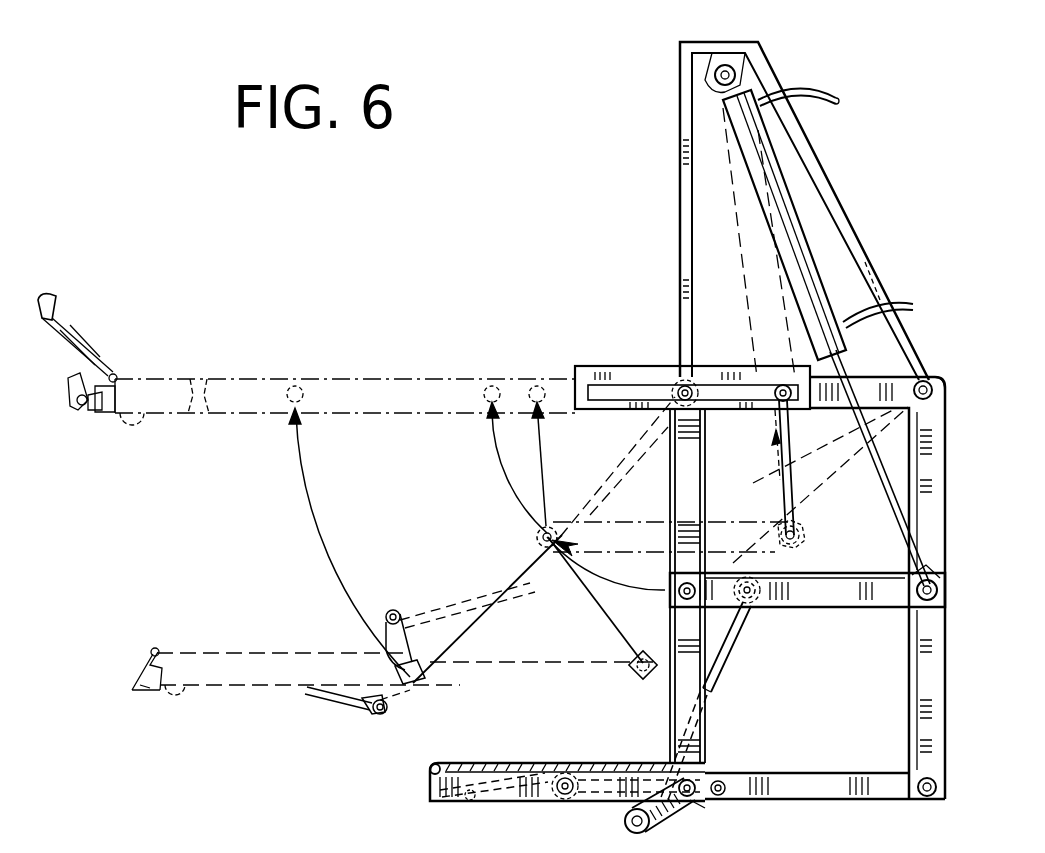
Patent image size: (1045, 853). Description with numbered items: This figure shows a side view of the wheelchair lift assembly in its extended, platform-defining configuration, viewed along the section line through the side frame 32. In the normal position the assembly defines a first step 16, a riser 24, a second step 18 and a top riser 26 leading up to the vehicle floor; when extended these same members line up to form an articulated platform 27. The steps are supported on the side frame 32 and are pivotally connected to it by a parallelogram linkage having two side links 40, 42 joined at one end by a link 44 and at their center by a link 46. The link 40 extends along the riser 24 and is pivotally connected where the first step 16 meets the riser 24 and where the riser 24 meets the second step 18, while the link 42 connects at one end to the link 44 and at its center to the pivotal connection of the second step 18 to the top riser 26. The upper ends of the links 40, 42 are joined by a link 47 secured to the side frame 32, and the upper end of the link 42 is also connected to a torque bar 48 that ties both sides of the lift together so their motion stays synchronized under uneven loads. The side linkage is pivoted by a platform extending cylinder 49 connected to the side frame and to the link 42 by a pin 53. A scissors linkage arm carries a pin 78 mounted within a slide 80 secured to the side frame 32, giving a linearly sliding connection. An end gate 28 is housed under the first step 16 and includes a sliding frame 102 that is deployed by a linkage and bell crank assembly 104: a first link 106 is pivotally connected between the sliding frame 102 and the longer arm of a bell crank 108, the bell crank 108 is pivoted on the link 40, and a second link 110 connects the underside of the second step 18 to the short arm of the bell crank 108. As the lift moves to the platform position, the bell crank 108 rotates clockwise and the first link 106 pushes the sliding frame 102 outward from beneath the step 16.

The first step 16 is at (522, 760).
The second step 18 is at (862, 570).
The riser 24 is at (668, 722).
The top riser 26 is at (907, 483).
The platform 27 is at (385, 372).
The end gate 28 is at (65, 300).
The side frame 32 is at (679, 50).
The side link 40 is at (698, 717).
The side link 42 is at (926, 698).
The link 44 is at (843, 782).
The link 46 is at (806, 605).
The link 47 is at (872, 293).
The torque bar 48 is at (926, 380).
The platform extending cylinder 49 is at (781, 190).
The pin 53 is at (906, 605).
The pin 78 is at (793, 404).
The slide 80 is at (640, 388).
The sliding frame 102 is at (526, 805).
The linkage and bell crank assembly 104 is at (697, 807).
The first link 106 is at (605, 805).
The bell crank 108 is at (665, 820).
The second link 110 is at (720, 663).